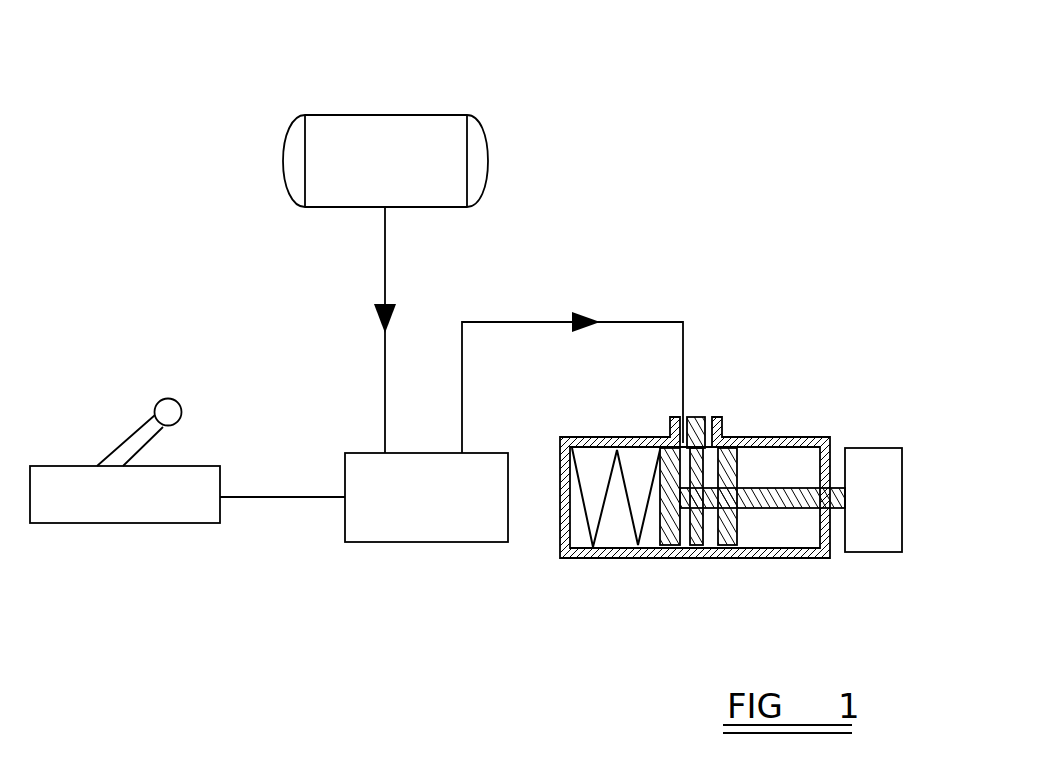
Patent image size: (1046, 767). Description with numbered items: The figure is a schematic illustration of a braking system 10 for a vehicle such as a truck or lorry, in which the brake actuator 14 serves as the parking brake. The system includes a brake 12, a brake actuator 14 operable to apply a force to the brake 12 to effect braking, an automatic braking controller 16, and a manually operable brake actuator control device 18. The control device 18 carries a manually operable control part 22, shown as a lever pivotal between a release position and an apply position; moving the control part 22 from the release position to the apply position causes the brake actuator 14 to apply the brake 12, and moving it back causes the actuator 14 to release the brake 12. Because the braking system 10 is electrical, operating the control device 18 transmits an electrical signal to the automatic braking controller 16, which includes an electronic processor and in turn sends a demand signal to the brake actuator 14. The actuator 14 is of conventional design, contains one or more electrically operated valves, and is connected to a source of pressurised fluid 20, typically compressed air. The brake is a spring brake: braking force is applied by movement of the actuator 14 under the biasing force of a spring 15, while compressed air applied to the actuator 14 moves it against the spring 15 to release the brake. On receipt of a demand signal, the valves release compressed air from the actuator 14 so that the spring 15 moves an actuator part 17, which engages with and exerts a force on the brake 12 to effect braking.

The braking system 10 is at (590, 145).
The brake 12 is at (873, 500).
The brake actuator 14 is at (647, 557).
The spring 15 is at (582, 508).
The automatic braking controller 16 is at (451, 427).
The actuator part 17 is at (835, 510).
The brake actuator control device 18 is at (112, 424).
The source of pressurised fluid 20 is at (385, 284).
The manually operable control part 22 is at (145, 437).